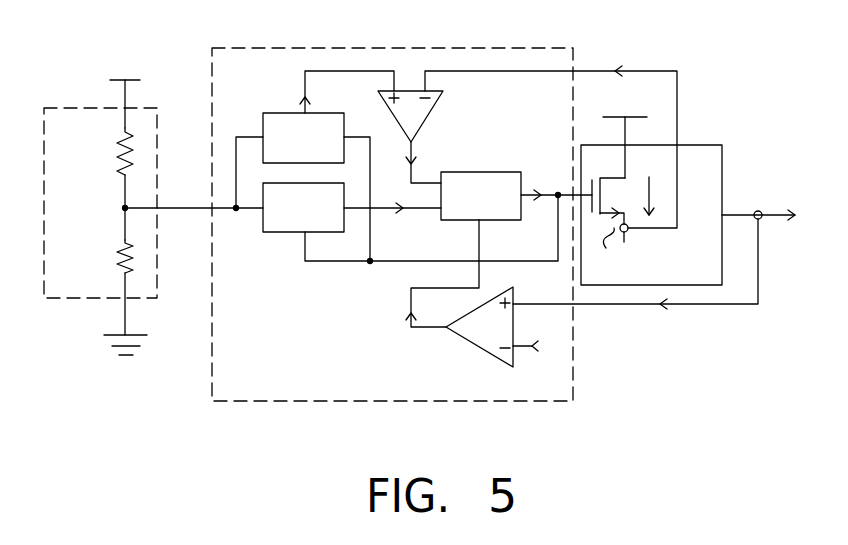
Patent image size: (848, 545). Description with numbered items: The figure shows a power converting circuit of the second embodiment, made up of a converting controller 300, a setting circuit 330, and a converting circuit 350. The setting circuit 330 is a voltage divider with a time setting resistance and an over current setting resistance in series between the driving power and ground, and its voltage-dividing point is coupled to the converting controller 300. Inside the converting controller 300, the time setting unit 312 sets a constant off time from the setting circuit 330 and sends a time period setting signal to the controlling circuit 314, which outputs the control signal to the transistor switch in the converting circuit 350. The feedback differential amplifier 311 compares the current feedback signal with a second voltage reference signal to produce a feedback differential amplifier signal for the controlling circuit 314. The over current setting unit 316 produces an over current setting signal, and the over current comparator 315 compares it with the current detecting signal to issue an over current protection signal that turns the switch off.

The converting controller 300 is at (220, 48).
The setting circuit 330 is at (82, 109).
The over current setting unit 316 is at (303, 138).
The time setting unit 312 is at (303, 207).
The controlling circuit 314 is at (481, 196).
The over current comparator 315 is at (431, 116).
The feedback differential amplifier 311 is at (470, 333).
The converting circuit 350 is at (712, 158).